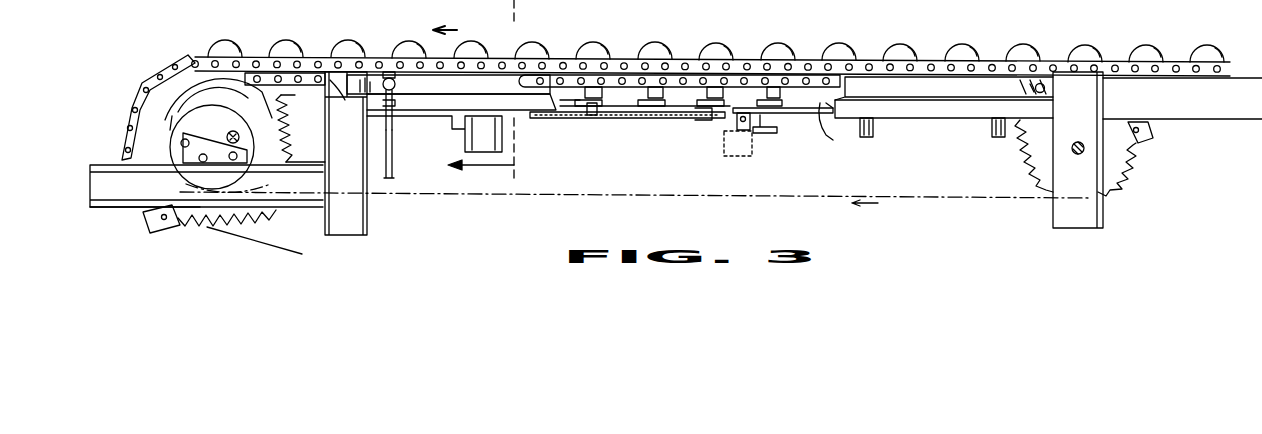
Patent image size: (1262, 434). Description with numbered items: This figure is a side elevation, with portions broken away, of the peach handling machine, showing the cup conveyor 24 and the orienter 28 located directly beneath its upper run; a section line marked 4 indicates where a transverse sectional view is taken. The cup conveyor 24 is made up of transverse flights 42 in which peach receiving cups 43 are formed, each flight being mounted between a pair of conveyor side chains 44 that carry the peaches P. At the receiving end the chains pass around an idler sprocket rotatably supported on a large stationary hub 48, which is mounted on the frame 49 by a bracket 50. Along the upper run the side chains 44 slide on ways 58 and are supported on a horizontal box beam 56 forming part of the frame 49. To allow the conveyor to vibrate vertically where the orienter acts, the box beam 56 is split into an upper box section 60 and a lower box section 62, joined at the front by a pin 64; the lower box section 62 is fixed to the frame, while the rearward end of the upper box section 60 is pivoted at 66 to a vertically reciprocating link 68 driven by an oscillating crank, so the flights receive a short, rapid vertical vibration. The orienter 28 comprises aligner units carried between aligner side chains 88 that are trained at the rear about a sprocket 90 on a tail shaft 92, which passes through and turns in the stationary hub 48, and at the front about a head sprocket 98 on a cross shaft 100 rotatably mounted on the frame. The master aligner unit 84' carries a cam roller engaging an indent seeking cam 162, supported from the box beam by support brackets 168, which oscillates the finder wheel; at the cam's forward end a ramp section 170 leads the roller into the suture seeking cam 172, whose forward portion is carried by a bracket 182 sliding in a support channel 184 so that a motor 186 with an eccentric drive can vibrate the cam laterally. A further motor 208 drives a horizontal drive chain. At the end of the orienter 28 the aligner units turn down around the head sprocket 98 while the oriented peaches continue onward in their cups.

The peach P is at (240, 45).
The cup conveyor 24 is at (529, 86).
The transverse flight 42 is at (196, 52).
The conveyor side chain 44 is at (748, 64).
The aligner side chain 88 is at (306, 74).
The tail shaft 92 is at (218, 140).
The stationary hub 48 is at (190, 134).
The bracket 50 is at (206, 186).
The frame 49 is at (118, 208).
The peach receiving cup 43 is at (206, 230).
The sprocket 90 is at (300, 144).
The upper box section 60 is at (482, 84).
The pivot 66 is at (388, 72).
The vertically reciprocating link 68 is at (394, 176).
The lower box section 62 is at (446, 114).
The horizontal box beam 56 is at (910, 118).
The section line 4 is at (489, 89).
The motor 208 is at (560, 118).
The master aligner unit 84' is at (605, 112).
The indent seeking cam 162 is at (656, 110).
The orienter 28 is at (664, 114).
The ramp section 170 is at (688, 120).
The support bracket 168 is at (740, 156).
The motor 186 is at (758, 156).
The support channel 184 is at (768, 135).
The bracket 182 is at (778, 114).
The suture seeking cam 172 is at (838, 118).
The cross shaft 100 is at (1078, 142).
The pin 64 is at (1044, 86).
The way 58 is at (1232, 74).
The head sprocket 98 is at (1128, 162).